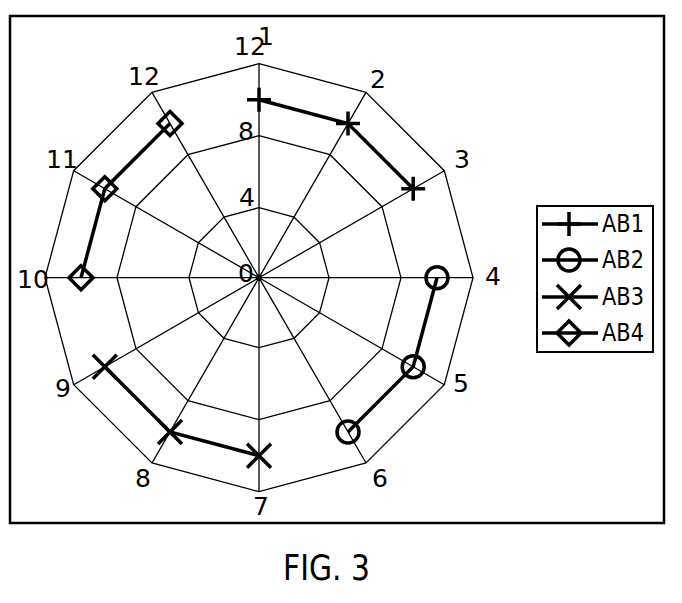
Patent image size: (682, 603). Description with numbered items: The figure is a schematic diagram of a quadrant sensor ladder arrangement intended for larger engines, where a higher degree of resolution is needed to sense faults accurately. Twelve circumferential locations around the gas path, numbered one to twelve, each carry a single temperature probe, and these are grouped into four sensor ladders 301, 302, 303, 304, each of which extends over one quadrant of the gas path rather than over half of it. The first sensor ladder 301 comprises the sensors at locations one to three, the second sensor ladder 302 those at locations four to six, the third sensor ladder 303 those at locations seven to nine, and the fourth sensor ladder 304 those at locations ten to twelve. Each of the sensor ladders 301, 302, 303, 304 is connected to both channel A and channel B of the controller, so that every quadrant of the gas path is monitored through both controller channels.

The sensor ladder 301 is at (388, 148).
The sensor ladder 302 is at (391, 405).
The sensor ladder 303 is at (127, 401).
The sensor ladder 304 is at (133, 149).